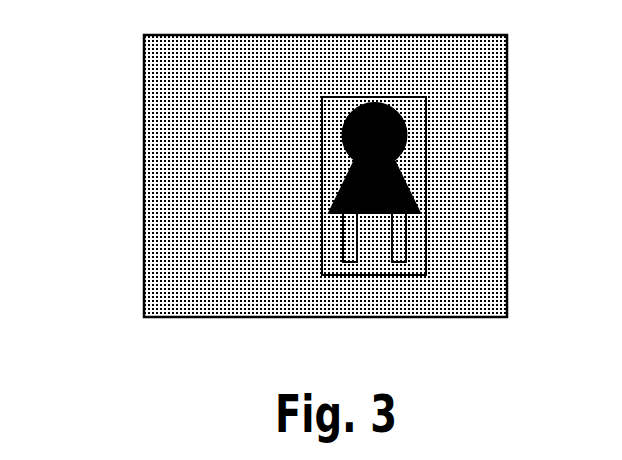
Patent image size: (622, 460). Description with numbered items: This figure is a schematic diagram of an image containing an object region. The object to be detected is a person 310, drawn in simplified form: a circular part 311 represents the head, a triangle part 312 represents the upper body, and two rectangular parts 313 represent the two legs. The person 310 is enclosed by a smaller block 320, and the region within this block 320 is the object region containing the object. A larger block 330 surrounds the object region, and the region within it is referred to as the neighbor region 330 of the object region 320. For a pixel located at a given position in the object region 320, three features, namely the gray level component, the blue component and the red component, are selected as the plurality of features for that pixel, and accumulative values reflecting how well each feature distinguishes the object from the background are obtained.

The person 310 is at (413, 193).
The circular part 311 is at (343, 123).
The triangle part 312 is at (353, 173).
The rectangular parts 313 is at (395, 262).
The block (object region) 320 is at (427, 178).
The block (neighbor region) 330 is at (505, 78).